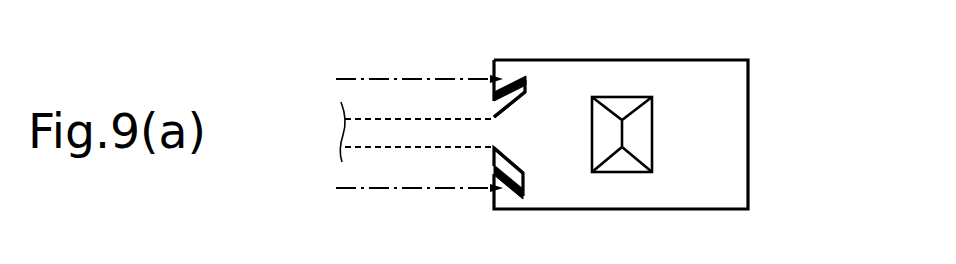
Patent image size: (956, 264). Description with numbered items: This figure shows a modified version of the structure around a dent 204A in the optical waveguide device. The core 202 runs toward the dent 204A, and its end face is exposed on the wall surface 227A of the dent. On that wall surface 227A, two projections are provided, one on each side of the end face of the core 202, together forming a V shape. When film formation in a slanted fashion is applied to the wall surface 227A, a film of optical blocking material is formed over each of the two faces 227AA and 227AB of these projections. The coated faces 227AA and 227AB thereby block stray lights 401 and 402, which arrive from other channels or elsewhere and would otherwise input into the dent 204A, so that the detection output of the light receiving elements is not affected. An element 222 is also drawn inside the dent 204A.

The dent 204A is at (749, 108).
The wall surface 227A is at (533, 148).
The face 227AA is at (519, 77).
The face 227AB is at (517, 200).
The optical element / prism 222 is at (640, 137).
The stray light 401 is at (393, 77).
The stray light 402 is at (396, 192).
The core 202 is at (456, 148).